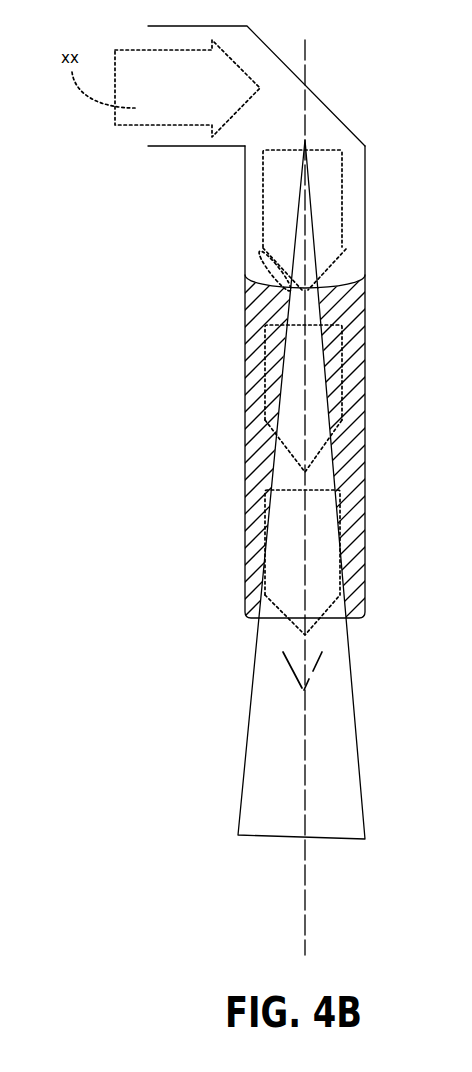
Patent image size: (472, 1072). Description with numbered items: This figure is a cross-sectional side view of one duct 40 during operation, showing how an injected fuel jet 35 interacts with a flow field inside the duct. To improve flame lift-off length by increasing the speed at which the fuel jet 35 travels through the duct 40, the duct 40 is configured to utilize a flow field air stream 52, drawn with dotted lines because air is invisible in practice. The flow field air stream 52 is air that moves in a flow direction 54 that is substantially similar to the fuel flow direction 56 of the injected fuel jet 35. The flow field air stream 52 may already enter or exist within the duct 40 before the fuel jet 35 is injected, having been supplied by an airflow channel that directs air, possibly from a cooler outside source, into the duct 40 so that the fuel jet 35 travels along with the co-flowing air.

The fuel jet 35 is at (268, 755).
The duct 40 is at (245, 490).
The flow field air stream 52 is at (332, 227).
The flow direction 54 is at (262, 247).
The fuel flow direction 56 is at (283, 652).